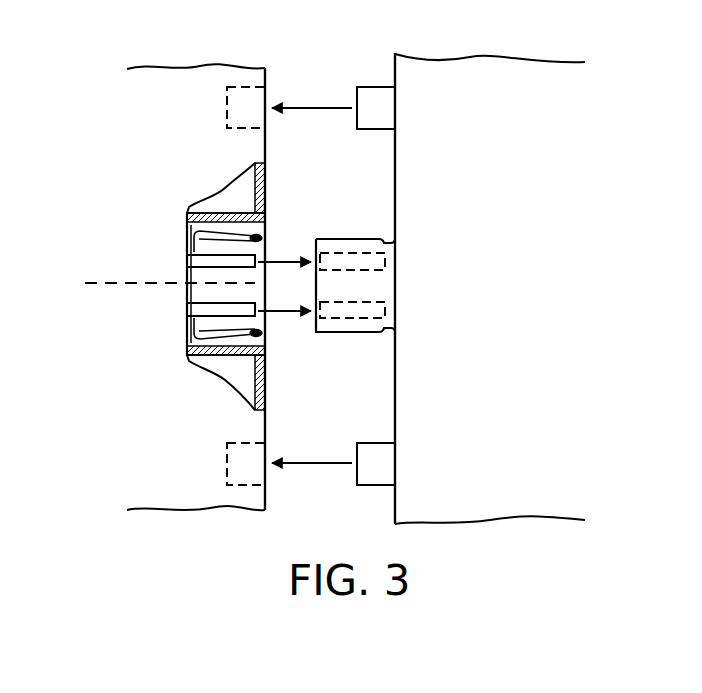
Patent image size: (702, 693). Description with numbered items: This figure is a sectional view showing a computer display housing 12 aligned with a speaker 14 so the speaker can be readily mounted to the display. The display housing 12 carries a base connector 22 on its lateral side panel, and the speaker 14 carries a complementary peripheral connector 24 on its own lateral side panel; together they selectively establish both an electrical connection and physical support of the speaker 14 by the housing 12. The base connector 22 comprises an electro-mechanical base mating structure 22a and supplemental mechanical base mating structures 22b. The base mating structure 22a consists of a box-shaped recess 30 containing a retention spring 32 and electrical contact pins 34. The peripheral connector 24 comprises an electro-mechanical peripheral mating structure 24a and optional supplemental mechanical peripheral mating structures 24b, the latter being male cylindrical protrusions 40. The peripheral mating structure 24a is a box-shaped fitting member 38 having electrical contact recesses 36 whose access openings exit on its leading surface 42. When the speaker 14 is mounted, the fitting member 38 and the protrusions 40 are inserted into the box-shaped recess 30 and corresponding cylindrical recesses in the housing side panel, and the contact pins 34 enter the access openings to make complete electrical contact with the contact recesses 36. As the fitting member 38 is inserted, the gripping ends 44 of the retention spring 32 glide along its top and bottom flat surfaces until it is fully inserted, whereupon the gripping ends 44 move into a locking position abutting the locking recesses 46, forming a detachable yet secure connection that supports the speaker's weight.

The computer display housing 12 is at (143, 470).
The speaker 14 is at (483, 473).
The base connector 22 is at (298, 65).
The electro-mechanical base mating structure 22a is at (272, 229).
The supplemental mechanical base mating structures 22b is at (273, 117).
The peripheral connector 24 is at (358, 65).
The electro-mechanical peripheral mating structure 24a is at (346, 234).
The supplemental mechanical peripheral mating structures 24b is at (350, 122).
The box-shaped recess 30 is at (200, 292).
The retention spring 32 is at (202, 238).
The electrical contact pins 34 is at (229, 262).
The electrical contact recesses 36 is at (360, 306).
The box-shaped fitting member 38 is at (385, 293).
The male cylindrical protrusions 40 is at (383, 107).
The leading surface 42 is at (258, 98).
The gripping ends 44 is at (262, 238).
The locking recesses 46 is at (388, 238).